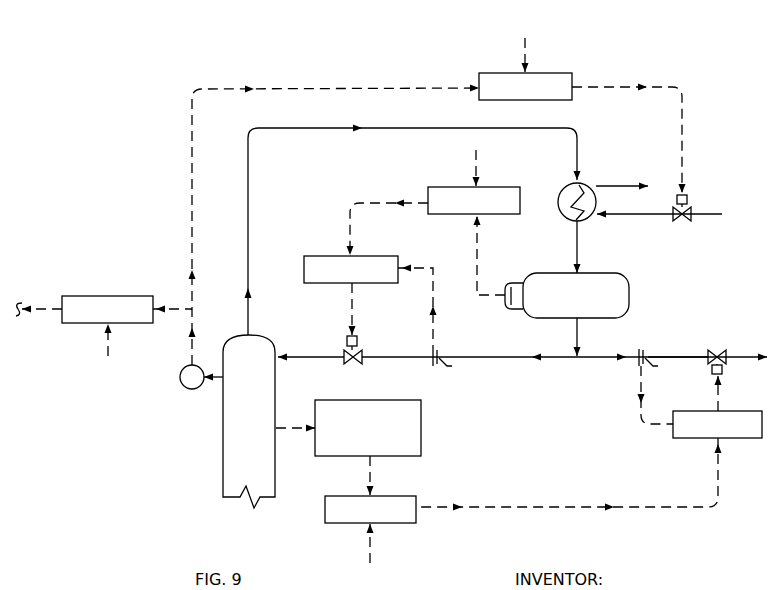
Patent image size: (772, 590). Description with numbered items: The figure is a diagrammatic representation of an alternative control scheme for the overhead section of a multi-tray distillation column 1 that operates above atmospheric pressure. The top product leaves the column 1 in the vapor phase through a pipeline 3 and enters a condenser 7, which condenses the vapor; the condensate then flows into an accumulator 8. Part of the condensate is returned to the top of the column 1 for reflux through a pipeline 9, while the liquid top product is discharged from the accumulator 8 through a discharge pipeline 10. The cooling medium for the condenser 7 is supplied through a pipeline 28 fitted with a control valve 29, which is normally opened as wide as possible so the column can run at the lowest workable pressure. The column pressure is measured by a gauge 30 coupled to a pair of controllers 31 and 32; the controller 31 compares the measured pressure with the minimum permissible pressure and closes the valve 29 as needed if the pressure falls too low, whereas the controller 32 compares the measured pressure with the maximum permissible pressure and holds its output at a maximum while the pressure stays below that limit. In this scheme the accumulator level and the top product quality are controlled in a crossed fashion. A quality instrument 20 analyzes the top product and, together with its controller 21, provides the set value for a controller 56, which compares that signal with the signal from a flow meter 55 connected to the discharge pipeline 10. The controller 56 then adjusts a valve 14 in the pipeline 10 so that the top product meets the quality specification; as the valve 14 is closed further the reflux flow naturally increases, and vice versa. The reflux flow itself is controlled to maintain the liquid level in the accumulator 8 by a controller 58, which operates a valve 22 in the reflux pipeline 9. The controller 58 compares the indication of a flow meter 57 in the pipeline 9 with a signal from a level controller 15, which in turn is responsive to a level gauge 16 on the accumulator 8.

The distillation column 1 is at (254, 477).
The pipeline 3 is at (248, 204).
The condenser 7 is at (561, 192).
The accumulator 8 is at (560, 273).
The pipeline 9 is at (546, 358).
The discharge pipeline 10 is at (665, 357).
The controllable valve 14 is at (719, 349).
The controller 15 is at (450, 188).
The level gauge 16 is at (505, 290).
The quality measuring instrument 20 is at (421, 421).
The controller 21 is at (388, 496).
The control valve 22 is at (354, 364).
The pipeline 28 is at (616, 214).
The control valve 29 is at (684, 222).
The gauge 30 is at (185, 387).
The controller 31 is at (544, 73).
The controller 32 is at (110, 296).
The flow meter 55 is at (638, 355).
The controller 56 is at (728, 411).
The flow meter 57 is at (432, 356).
The controller 58 is at (362, 256).